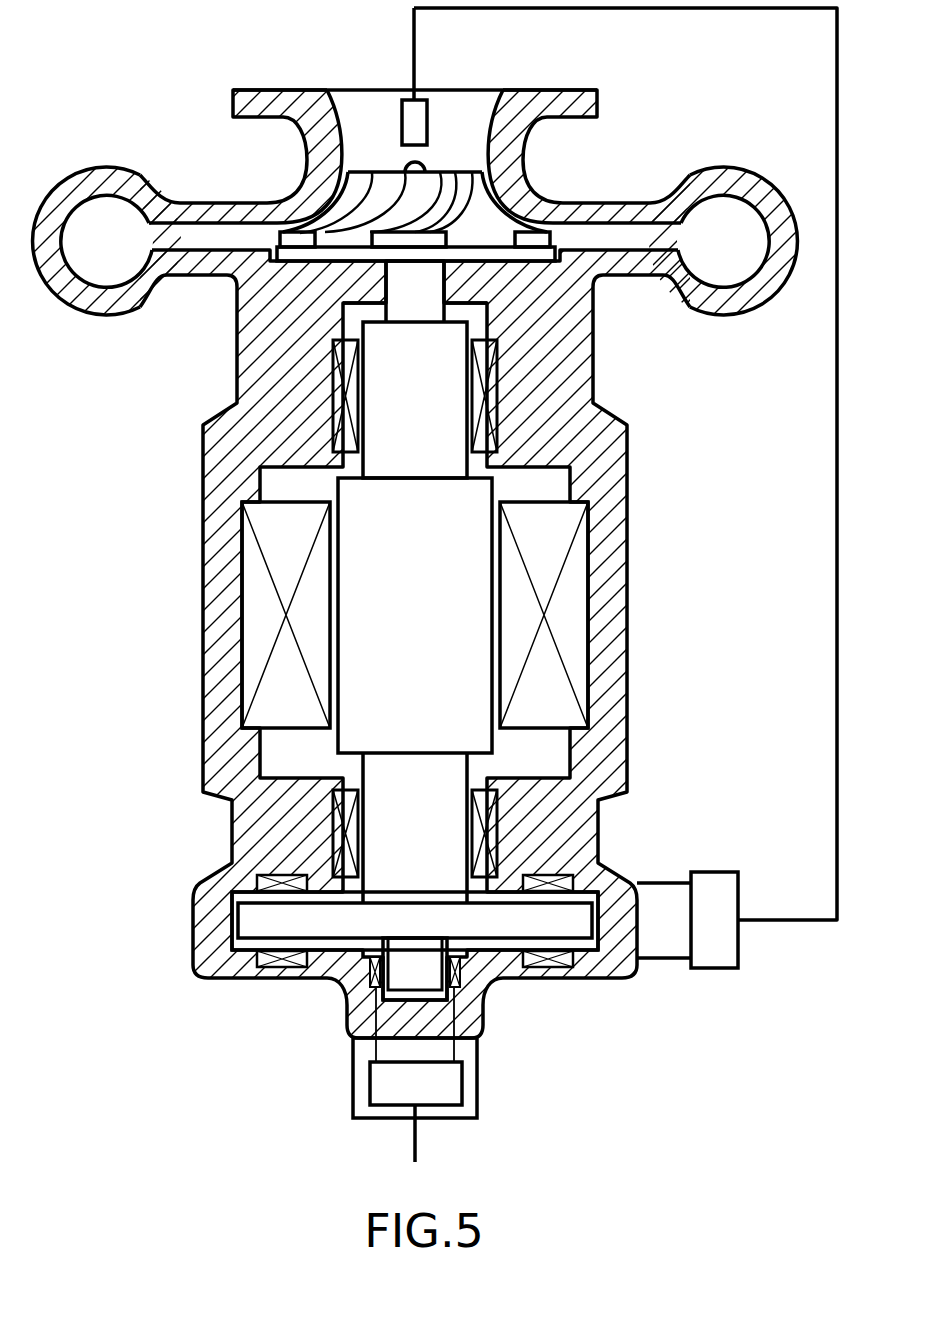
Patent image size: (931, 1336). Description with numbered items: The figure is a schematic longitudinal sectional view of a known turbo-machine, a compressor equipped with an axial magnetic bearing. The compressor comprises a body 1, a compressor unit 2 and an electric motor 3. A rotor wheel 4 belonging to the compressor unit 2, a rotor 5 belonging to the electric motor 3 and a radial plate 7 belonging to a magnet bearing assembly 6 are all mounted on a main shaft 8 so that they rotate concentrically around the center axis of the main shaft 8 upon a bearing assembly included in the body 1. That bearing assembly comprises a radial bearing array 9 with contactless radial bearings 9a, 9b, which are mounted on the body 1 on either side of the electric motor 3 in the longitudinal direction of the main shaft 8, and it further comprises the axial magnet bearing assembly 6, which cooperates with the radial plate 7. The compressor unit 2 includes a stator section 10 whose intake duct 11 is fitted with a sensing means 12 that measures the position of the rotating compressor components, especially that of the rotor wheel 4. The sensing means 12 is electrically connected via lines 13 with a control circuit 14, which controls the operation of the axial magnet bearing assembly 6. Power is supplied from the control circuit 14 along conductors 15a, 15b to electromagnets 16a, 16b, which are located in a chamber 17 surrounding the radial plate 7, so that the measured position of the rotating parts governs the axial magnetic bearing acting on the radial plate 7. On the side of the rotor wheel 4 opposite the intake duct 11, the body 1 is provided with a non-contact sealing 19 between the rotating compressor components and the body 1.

The body 1 is at (208, 588).
The compressor unit 2 is at (380, 186).
The electric motor 3 is at (309, 629).
The rotor wheel 4 is at (458, 178).
The rotor 5 is at (467, 587).
The axial magnet bearing assembly 6 is at (445, 917).
The radial plate 7 is at (248, 923).
The main shaft 8 is at (441, 468).
The radial bearing array 9 is at (345, 429).
The contactless radial bearing 9a is at (475, 392).
The contactless radial bearing 9b is at (470, 814).
The stator section 10 is at (515, 170).
The intake duct 11 is at (447, 100).
The sensing means 12 is at (406, 102).
The lines 13 is at (837, 484).
The control circuit 14 is at (713, 886).
The conductor 15a is at (664, 882).
The conductor 15b is at (660, 959).
The electromagnet 16a is at (283, 874).
The electromagnet 16b is at (278, 964).
The chamber 17 is at (496, 942).
The non-contact sealing 19 is at (380, 287).